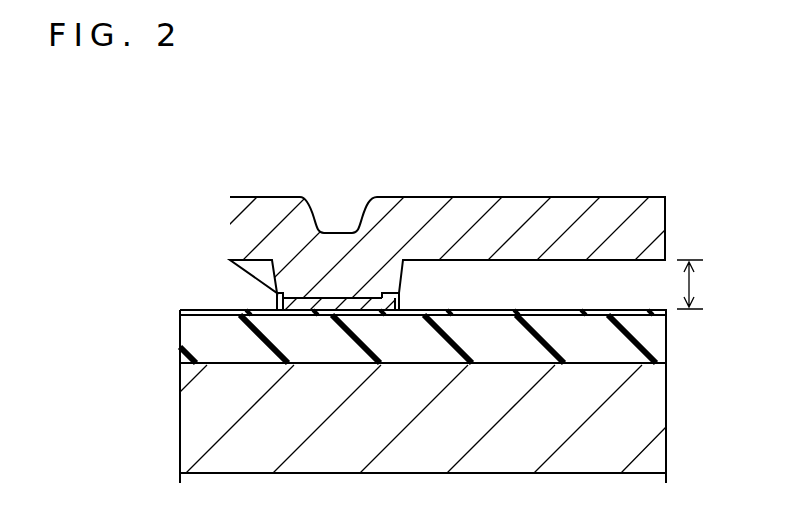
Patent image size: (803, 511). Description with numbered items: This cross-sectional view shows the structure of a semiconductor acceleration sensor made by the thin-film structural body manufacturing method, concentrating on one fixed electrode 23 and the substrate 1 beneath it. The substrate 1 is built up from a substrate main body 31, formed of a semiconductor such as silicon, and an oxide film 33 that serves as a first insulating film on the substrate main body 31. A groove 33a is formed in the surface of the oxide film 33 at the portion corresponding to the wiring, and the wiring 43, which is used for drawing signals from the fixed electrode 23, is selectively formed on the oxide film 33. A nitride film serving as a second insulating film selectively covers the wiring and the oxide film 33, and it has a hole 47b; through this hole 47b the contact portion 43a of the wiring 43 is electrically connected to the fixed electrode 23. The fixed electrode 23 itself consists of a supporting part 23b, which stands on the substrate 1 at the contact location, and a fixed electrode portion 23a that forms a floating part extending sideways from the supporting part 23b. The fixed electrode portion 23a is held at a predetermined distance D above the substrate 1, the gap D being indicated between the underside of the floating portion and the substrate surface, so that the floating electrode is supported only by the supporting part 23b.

The substrate 1 is at (179, 413).
The substrate main body 31 is at (667, 413).
The oxide film 33 is at (667, 347).
The groove 33a is at (377, 298).
The wiring 43 is at (330, 298).
The contact portion 43a is at (348, 298).
The hole 47b is at (296, 294).
The fixed electrode 23 is at (230, 221).
The fixed electrode portion 23a is at (540, 197).
The supporting part 23b is at (403, 284).
The predetermined distance D is at (690, 283).